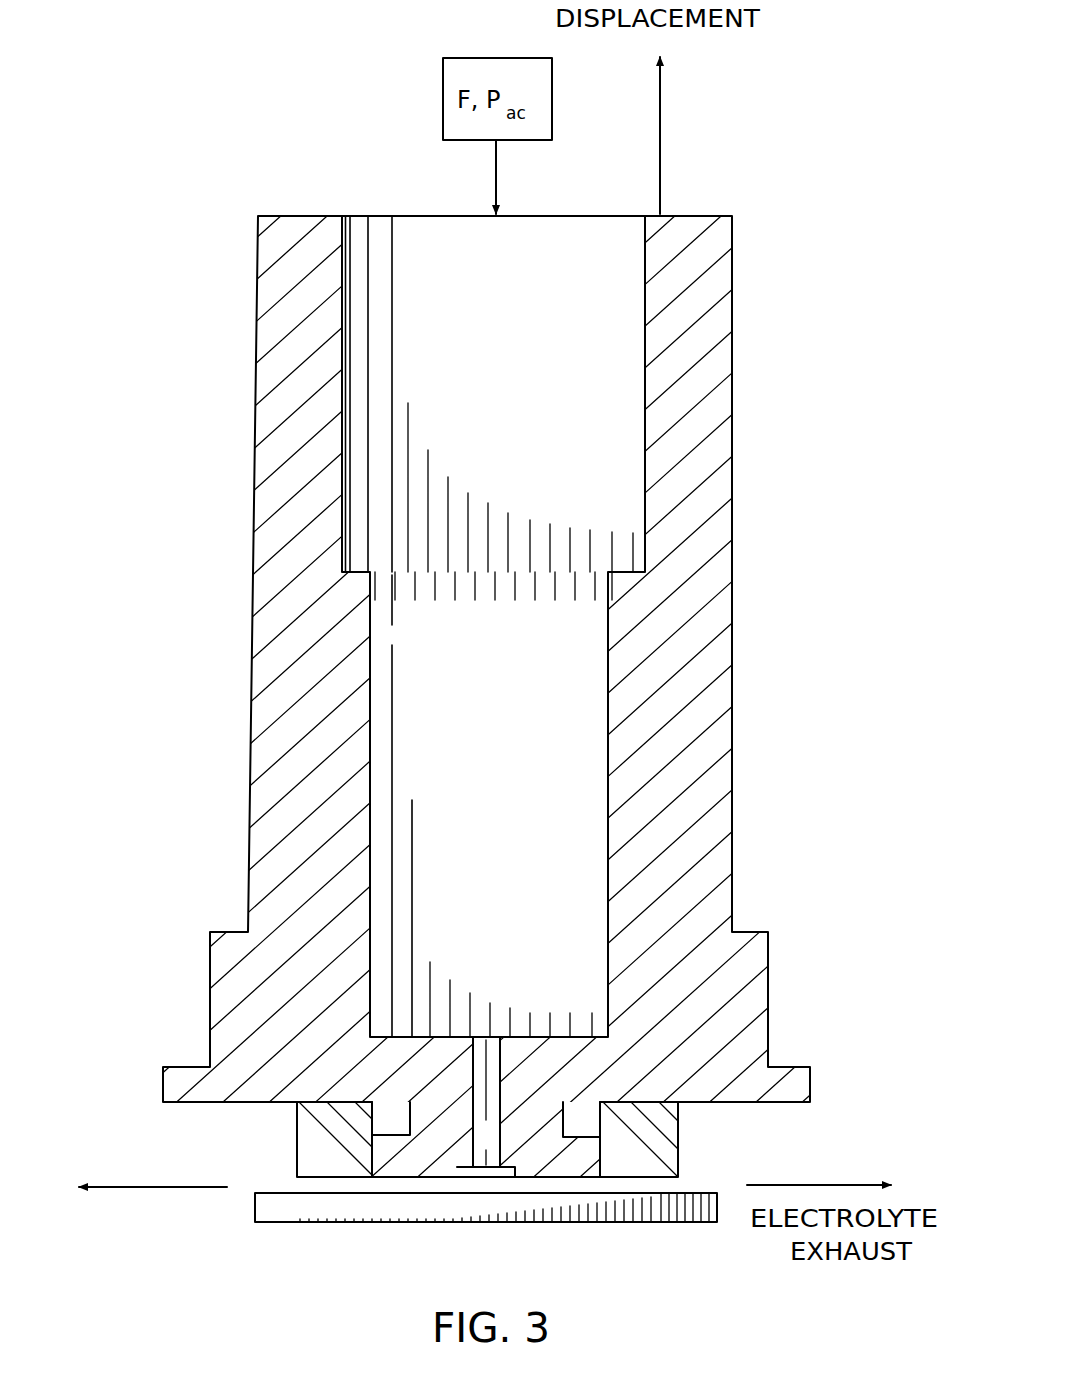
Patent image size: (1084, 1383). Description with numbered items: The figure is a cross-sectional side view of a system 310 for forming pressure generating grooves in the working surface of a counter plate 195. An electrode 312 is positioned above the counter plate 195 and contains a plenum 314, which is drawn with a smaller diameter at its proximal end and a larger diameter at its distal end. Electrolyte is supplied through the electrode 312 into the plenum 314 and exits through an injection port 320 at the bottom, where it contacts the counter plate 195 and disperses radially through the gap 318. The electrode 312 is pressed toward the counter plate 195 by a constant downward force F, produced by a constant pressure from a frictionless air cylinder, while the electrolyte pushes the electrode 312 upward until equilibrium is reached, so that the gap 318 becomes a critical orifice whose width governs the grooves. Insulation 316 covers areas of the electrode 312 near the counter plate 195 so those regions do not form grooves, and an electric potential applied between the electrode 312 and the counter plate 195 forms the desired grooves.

The system 310 is at (203, 644).
The electrode 312 is at (733, 308).
The plenum 314 is at (403, 345).
The insulation 316 is at (297, 1141).
The gap 318 is at (668, 1184).
The injection port 320 is at (492, 1092).
The counter plate 195 is at (628, 1222).